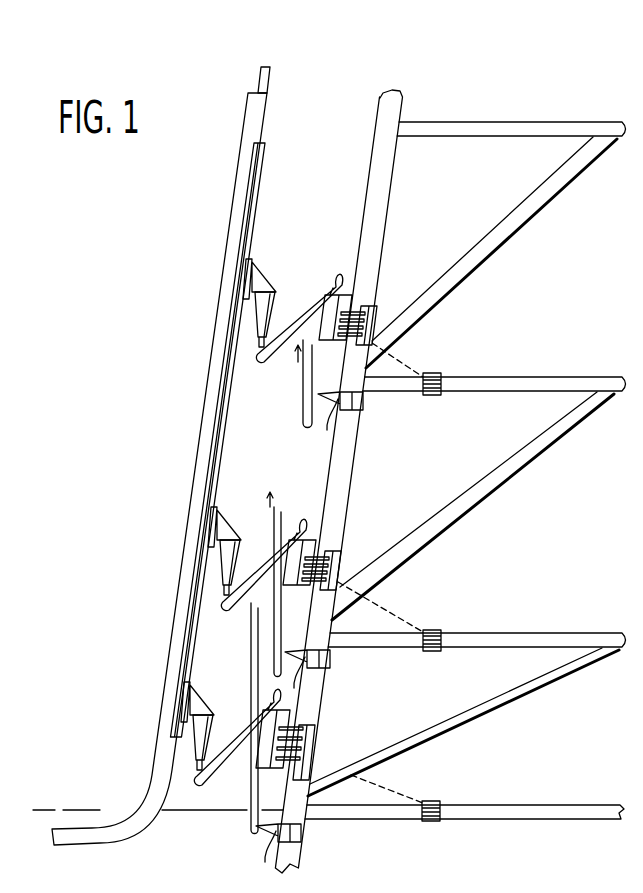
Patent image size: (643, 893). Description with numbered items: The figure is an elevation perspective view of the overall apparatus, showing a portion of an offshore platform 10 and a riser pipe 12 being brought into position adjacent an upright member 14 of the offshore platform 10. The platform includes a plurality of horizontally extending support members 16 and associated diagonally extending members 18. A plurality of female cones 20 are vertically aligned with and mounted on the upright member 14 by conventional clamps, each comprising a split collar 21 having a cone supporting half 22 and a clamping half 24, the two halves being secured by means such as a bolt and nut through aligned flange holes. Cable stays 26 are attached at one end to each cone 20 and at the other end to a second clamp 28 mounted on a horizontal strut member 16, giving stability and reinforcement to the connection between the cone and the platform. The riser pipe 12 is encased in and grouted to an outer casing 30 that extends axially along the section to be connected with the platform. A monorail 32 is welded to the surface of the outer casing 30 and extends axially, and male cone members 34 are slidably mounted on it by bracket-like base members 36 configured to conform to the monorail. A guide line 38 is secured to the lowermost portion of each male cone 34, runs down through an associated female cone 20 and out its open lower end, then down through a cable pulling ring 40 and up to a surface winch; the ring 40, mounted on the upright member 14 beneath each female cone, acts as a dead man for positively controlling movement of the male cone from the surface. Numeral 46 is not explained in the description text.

The offshore platform 10 is at (496, 110).
The riser pipe 12 is at (258, 84).
The upright member 14 is at (381, 130).
The horizontally extending support member 16 is at (573, 132).
The diagonally extending member 18 is at (480, 253).
The female cone 20 is at (330, 277).
The split collar 21 is at (373, 318).
The cone supporting half 22 is at (350, 292).
The clamping half 24 is at (380, 307).
The cable stay 26 is at (403, 358).
The second clamp 28 is at (443, 364).
The outer casing 30 is at (246, 167).
The monorail 32 is at (262, 177).
The male cone member 34 is at (270, 313).
The base member 36 is at (252, 272).
The guide line 38 is at (302, 388).
The cable pulling ring 40 is at (333, 412).
The lower clamp 46 is at (363, 400).